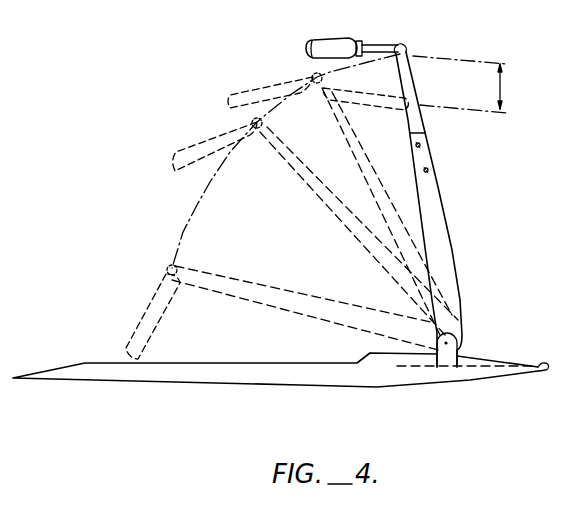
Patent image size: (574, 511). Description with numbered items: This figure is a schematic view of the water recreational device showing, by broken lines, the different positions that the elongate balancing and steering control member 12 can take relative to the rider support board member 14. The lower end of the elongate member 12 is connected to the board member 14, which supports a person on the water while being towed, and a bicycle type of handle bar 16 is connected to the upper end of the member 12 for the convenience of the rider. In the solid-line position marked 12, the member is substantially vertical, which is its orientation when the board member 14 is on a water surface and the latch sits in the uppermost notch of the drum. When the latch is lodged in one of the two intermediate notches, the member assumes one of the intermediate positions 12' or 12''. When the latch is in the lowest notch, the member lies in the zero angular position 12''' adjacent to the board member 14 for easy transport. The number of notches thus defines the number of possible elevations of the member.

The elongate member 12 is at (450, 205).
The elongate member in first intermediate position 12' is at (340, 204).
The elongate member in second intermediate position 12'' is at (315, 226).
The elongate member in zero angular position 12''' is at (282, 304).
The rider support board member 14 is at (163, 382).
The handle bar 16 is at (340, 40).